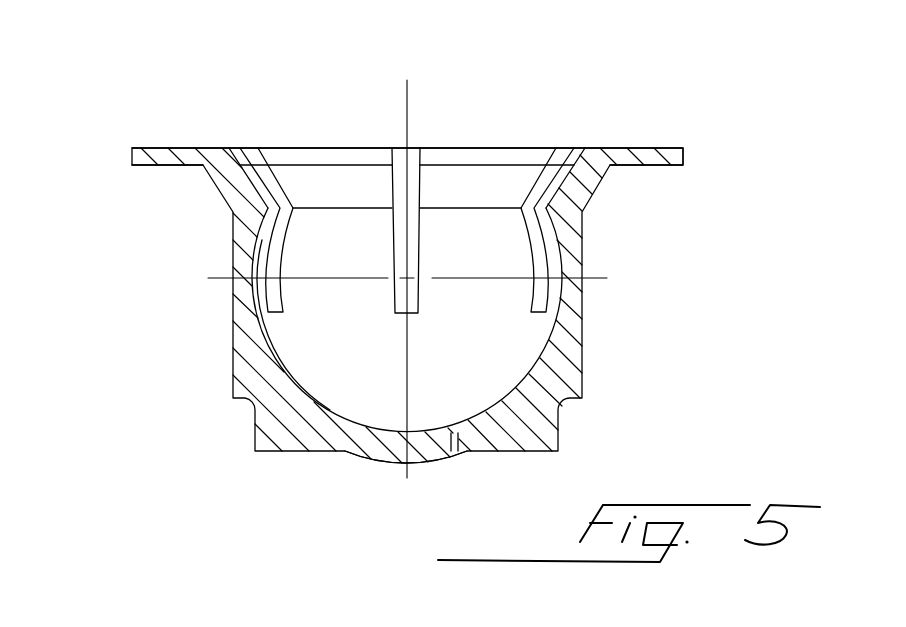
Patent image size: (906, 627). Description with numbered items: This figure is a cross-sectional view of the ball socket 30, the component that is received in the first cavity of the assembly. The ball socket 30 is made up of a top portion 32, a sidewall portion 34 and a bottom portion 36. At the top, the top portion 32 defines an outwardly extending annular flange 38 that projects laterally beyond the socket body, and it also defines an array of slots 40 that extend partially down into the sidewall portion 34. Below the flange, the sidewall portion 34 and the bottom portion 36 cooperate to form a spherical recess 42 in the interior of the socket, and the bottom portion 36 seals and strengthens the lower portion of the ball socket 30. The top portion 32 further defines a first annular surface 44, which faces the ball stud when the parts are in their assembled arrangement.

The ball socket 30 is at (233, 93).
The top portion 32 is at (191, 176).
The sidewall portion 34 is at (209, 302).
The bottom portion 36 is at (388, 467).
The annular flange 38 is at (132, 160).
The slots 40 is at (418, 167).
The spherical recess 42 is at (288, 377).
The first annular surface 44 is at (316, 178).